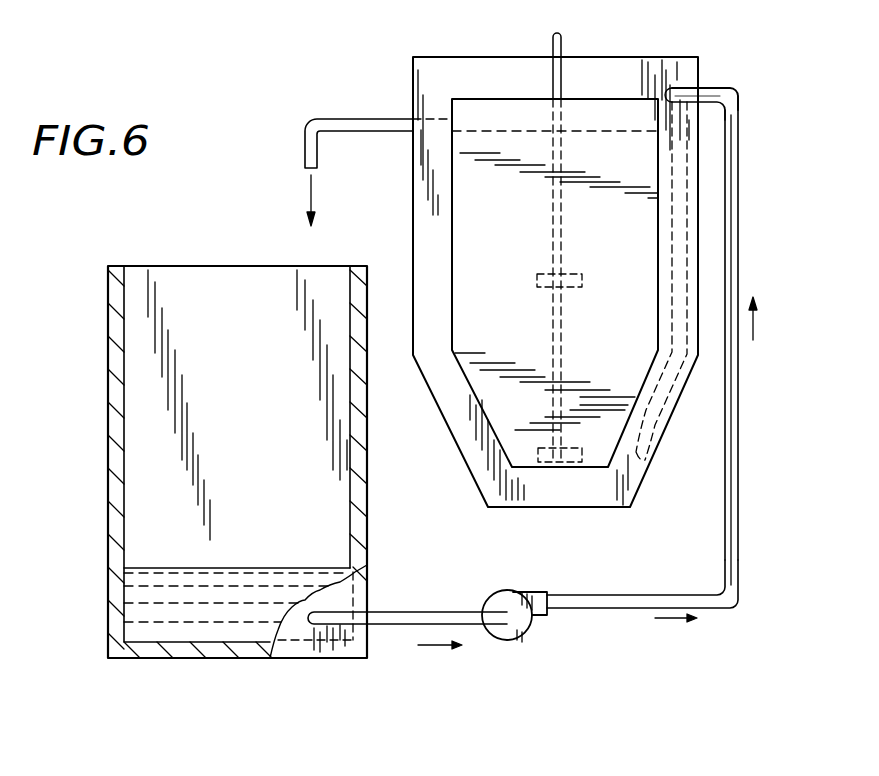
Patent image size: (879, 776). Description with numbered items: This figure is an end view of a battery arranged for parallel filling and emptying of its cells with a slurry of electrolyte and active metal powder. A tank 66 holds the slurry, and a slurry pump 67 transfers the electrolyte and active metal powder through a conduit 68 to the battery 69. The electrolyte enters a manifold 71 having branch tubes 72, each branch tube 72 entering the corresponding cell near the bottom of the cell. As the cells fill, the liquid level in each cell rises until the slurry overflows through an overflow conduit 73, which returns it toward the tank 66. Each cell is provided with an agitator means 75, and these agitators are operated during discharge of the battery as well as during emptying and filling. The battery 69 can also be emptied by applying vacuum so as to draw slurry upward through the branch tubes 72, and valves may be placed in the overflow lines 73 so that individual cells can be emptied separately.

The tank 66 is at (113, 266).
The slurry pump 67 is at (515, 592).
The conduit 68 is at (678, 596).
The battery 69 is at (559, 260).
The manifold 71 is at (678, 88).
The branch tube 72 is at (690, 193).
The overflow conduit 73 is at (350, 118).
The agitator means 75 is at (563, 45).